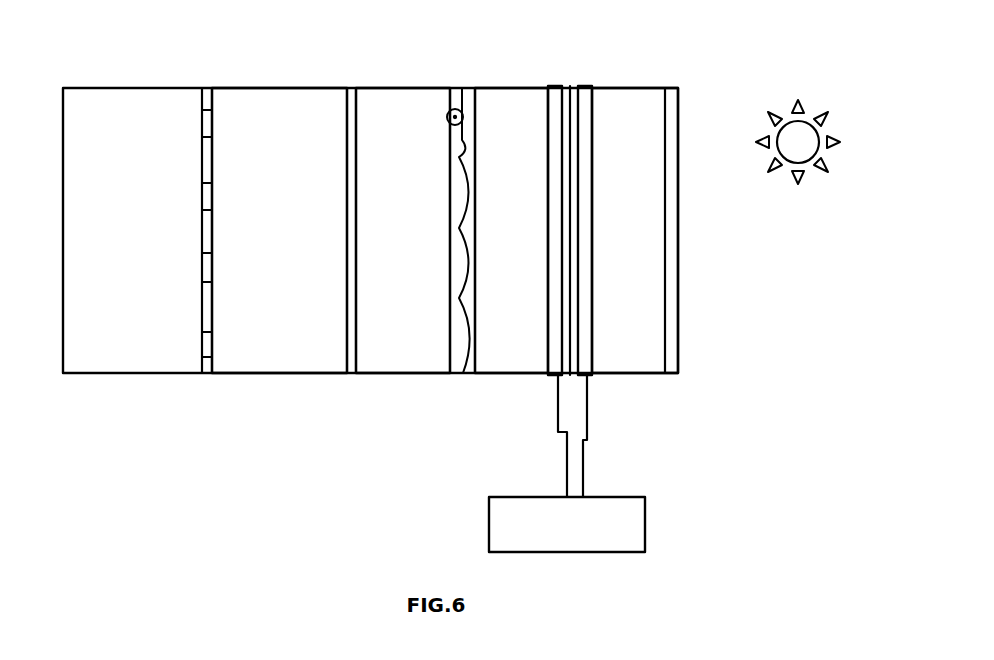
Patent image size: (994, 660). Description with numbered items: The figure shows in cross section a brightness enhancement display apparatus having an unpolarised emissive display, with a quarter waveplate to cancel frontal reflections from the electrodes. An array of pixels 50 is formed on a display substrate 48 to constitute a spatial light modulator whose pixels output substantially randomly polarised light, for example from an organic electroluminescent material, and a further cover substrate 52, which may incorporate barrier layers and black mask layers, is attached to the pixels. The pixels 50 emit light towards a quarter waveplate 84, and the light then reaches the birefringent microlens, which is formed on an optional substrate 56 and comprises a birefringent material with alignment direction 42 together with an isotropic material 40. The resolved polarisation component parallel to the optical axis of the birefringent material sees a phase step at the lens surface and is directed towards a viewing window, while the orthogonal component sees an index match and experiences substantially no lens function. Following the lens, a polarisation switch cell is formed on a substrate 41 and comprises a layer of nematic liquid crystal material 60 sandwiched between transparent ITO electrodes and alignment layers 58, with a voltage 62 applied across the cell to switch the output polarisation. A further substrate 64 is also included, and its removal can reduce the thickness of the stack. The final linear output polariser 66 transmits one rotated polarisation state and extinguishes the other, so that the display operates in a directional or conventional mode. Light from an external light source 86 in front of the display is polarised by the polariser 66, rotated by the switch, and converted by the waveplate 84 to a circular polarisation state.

The isotropic material 40 is at (468, 373).
The substrate 41 is at (510, 373).
The birefringent microlens array 42 is at (450, 110).
The display substrate 48 is at (135, 373).
The array of pixels 50 is at (211, 373).
The cover substrate 52 is at (280, 373).
The substrate 56 is at (403, 373).
The transparent ITO electrodes and alignment layer 58 is at (549, 86).
The nematic liquid crystal material layer 60 is at (570, 86).
The voltage source 62 is at (567, 463).
The substrate 64 is at (620, 86).
The output polariser 66 is at (672, 373).
The quarter waveplate 84 is at (353, 373).
The external light source 86 is at (796, 100).